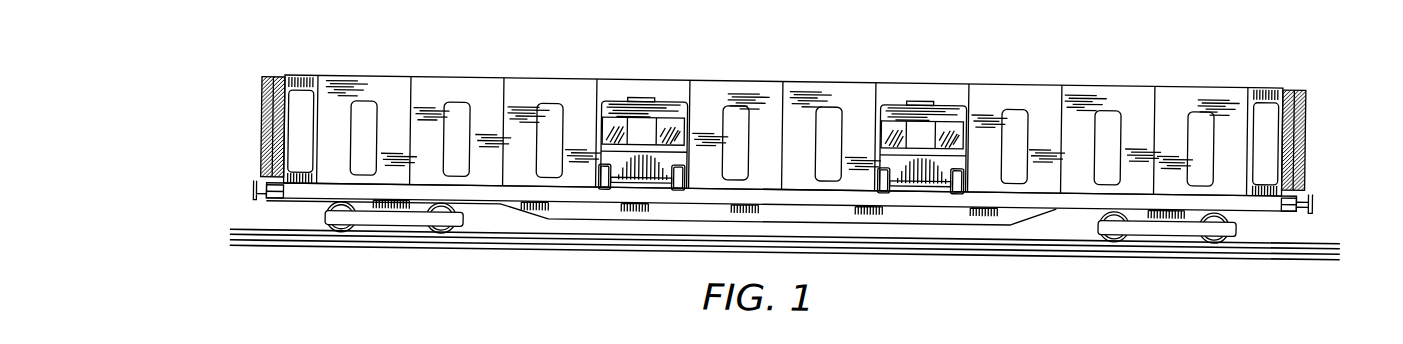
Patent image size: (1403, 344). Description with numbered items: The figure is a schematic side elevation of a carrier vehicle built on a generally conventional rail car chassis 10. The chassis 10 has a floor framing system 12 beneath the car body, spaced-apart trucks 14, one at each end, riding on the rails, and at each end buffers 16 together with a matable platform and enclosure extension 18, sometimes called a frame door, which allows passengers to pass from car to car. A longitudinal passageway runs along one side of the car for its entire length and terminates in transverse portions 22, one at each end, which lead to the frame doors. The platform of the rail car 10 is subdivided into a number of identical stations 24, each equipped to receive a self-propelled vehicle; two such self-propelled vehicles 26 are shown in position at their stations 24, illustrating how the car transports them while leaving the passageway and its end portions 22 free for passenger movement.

The rail car chassis 10 is at (1110, 59).
The floor framing system 12 is at (1075, 201).
The trucks 14 is at (388, 217).
The buffers 16 is at (258, 187).
The matable platform and enclosure extension 18 is at (260, 100).
The transverse portions of the passageway 22 is at (302, 77).
The stations 24 is at (537, 82).
The self-propelled vehicles 26 is at (665, 93).